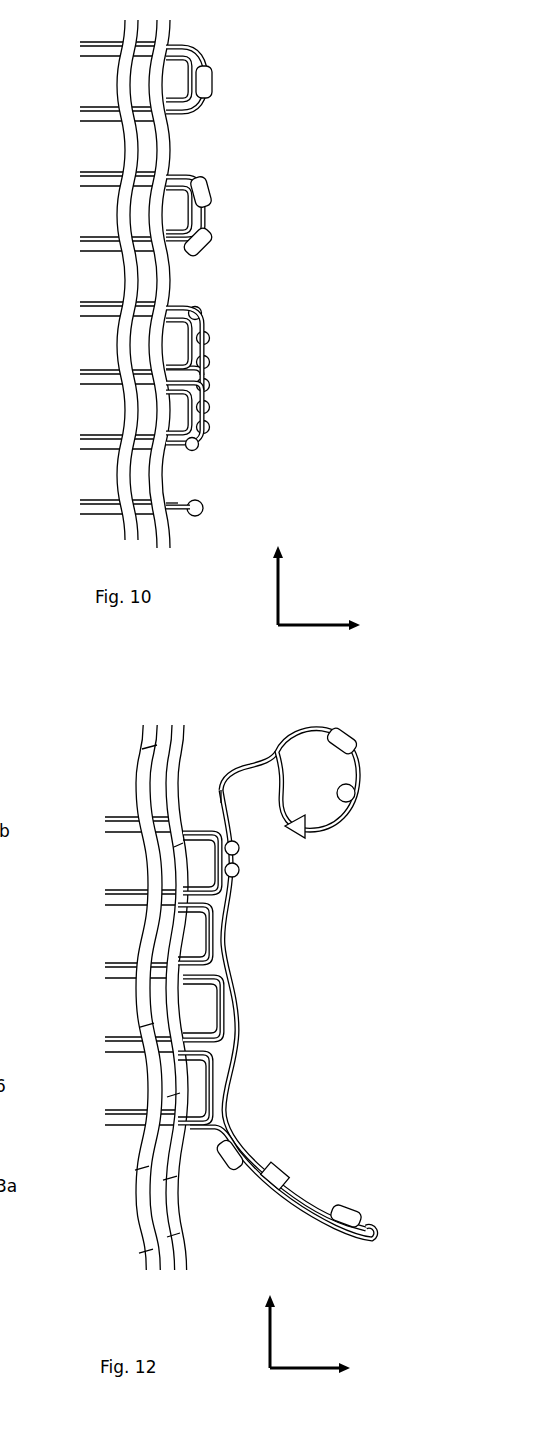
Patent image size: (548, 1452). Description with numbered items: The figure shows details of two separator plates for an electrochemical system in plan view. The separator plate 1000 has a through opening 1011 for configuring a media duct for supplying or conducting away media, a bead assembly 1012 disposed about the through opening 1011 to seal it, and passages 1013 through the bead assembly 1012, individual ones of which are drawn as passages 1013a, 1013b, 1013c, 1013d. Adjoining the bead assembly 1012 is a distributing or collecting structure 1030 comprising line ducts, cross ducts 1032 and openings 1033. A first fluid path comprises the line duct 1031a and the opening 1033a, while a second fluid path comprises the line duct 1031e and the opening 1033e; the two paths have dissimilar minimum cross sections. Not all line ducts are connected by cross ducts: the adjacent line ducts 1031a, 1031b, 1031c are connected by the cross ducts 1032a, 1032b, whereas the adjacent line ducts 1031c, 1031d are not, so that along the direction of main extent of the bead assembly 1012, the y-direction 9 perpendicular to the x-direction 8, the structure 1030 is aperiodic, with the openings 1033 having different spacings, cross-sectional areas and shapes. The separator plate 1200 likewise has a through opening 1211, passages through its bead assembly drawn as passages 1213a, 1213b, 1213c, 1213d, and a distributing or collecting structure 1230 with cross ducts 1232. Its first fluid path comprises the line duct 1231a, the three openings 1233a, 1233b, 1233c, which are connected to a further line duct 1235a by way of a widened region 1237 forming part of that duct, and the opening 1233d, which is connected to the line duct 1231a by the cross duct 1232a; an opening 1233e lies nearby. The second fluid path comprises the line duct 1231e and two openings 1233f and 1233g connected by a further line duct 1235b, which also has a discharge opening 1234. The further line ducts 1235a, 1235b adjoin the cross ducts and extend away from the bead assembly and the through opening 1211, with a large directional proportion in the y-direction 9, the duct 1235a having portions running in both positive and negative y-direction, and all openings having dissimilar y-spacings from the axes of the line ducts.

In FIG. 10, the separator plate 1000 is at (240, 38).
In FIG. 10, the through opening 1011 is at (60, 205).
In FIG. 10, the bead assembly 1012 is at (138, 504).
In FIG. 10, the passages 1013 is at (157, 325).
In FIG. 10, the passage 1013a is at (157, 58).
In FIG. 10, the passage 1013b is at (157, 495).
In FIG. 10, the passage 1013c is at (155, 120).
In FIG. 10, the passage 1013d is at (158, 432).
In FIG. 10, the distributing or collecting structure 1030 is at (242, 518).
In FIG. 10, the line duct 1031a is at (168, 449).
In FIG. 10, the line duct 1031b is at (196, 435).
In FIG. 10, the line duct 1031c is at (170, 306).
In FIG. 10, the line duct 1031d is at (171, 249).
In FIG. 10, the line duct 1031e is at (177, 182).
In FIG. 10, the cross ducts 1032 is at (204, 219).
In FIG. 10, the cross duct 1032a is at (205, 395).
In FIG. 10, the cross duct 1032b is at (205, 349).
In FIG. 10, the openings 1033 is at (206, 244).
In FIG. 10, the opening 1033a is at (194, 446).
In FIG. 10, the opening 1033e is at (203, 192).
In FIG. 10, the x-direction 8 is at (311, 622).
In FIG. 12, the x-direction 8 is at (300, 1365).
In FIG. 10, the y-direction 9 is at (278, 590).
In FIG. 12, the y-direction 9 is at (270, 1346).
In FIG. 12, the separator plate 1200 is at (204, 715).
In FIG. 12, the through opening 1211 is at (97, 913).
In FIG. 12, the passage 1213a is at (182, 842).
In FIG. 12, the passage 1213b is at (182, 1128).
In FIG. 12, the passage 1213c is at (177, 912).
In FIG. 12, the passage 1213d is at (184, 984).
In FIG. 12, the distributing or collecting structure 1230 is at (322, 1268).
In FIG. 12, the line duct 1231a is at (193, 826).
In FIG. 12, the line duct 1231e is at (197, 1118).
In FIG. 12, the cross ducts 1232 is at (222, 930).
In FIG. 12, the cross duct 1232a is at (222, 803).
In FIG. 12, the opening 1233a is at (349, 740).
In FIG. 12, the opening 1233b is at (349, 793).
In FIG. 12, the opening 1233c is at (307, 830).
In FIG. 12, the opening 1233d is at (240, 849).
In FIG. 12, the opening 1233e is at (240, 871).
In FIG. 12, the opening 1233f is at (278, 1171).
In FIG. 12, the opening 1233g is at (352, 1213).
In FIG. 12, the discharge opening 1234 is at (232, 1160).
In FIG. 12, the further line duct 1235a is at (260, 767).
In FIG. 12, the further line duct 1235b is at (233, 1128).
In FIG. 12, the widened region 1237 is at (320, 752).